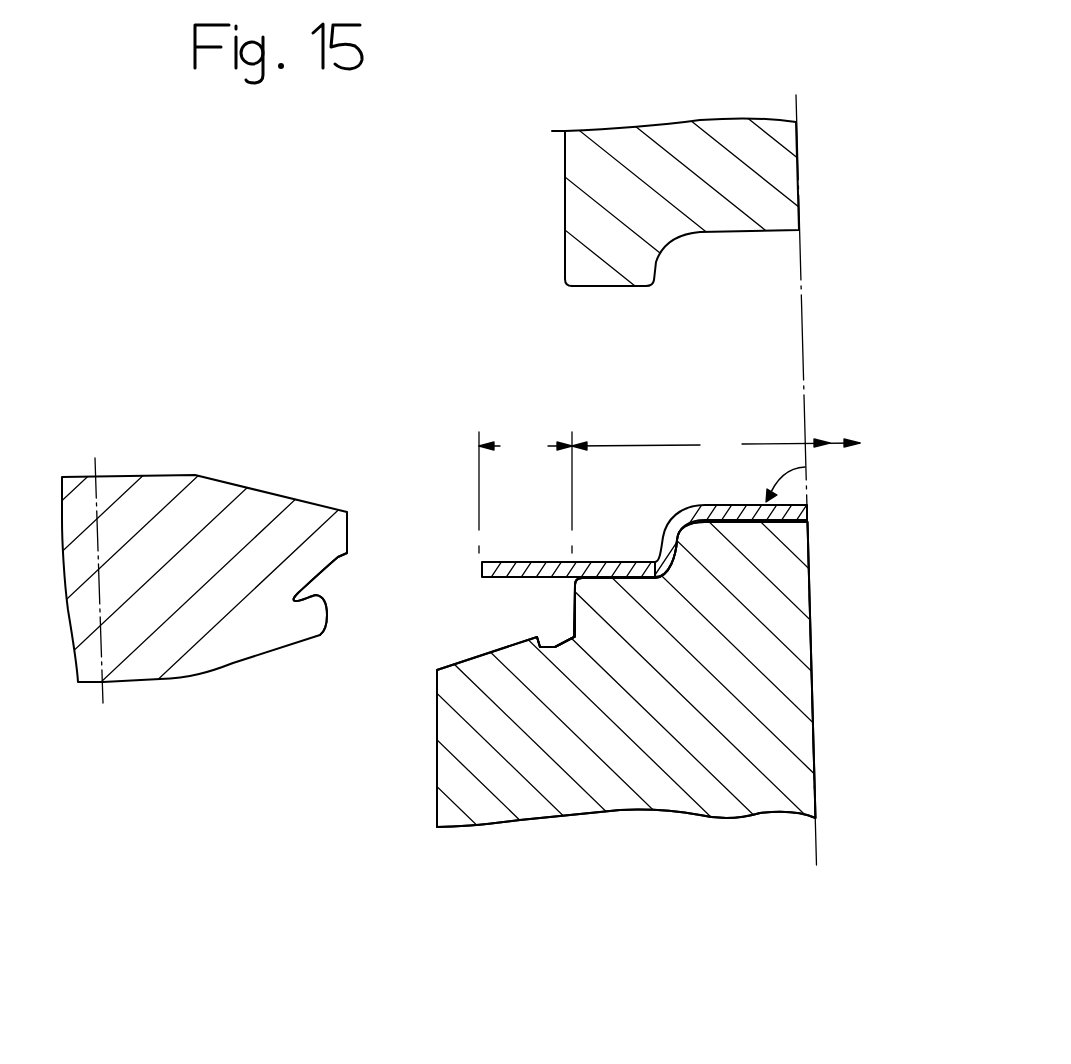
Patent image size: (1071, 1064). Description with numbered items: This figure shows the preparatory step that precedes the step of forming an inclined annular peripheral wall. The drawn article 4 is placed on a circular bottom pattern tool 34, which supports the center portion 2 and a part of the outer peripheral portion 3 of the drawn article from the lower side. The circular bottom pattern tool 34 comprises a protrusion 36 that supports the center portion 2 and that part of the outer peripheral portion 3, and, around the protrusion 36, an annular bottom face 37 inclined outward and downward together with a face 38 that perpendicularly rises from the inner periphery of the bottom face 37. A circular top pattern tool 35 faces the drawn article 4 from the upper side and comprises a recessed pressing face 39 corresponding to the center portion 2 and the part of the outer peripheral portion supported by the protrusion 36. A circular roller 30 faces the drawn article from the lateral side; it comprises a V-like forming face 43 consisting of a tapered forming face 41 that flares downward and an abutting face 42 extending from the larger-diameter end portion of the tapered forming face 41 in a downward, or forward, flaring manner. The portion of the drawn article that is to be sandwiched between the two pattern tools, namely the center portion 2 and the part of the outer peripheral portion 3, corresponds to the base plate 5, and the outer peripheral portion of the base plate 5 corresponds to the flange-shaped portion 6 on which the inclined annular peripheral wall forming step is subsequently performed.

The center portion 2 is at (727, 500).
The outer peripheral portion 3 is at (533, 561).
The drawn article 4 is at (805, 467).
The base plate 5 is at (716, 447).
The flange-shaped portion 6 is at (525, 483).
The circular roller 30 is at (170, 473).
The circular bottom pattern tool 34 is at (633, 805).
The circular top pattern tool 35 is at (565, 163).
The protrusion 36 is at (808, 572).
The annular bottom face 37 is at (552, 645).
The face 38 is at (573, 610).
The recessed pressing face 39 is at (598, 290).
The tapered forming face 41 is at (337, 558).
The abutting face 42 is at (310, 665).
The V-like forming face 43 is at (343, 669).